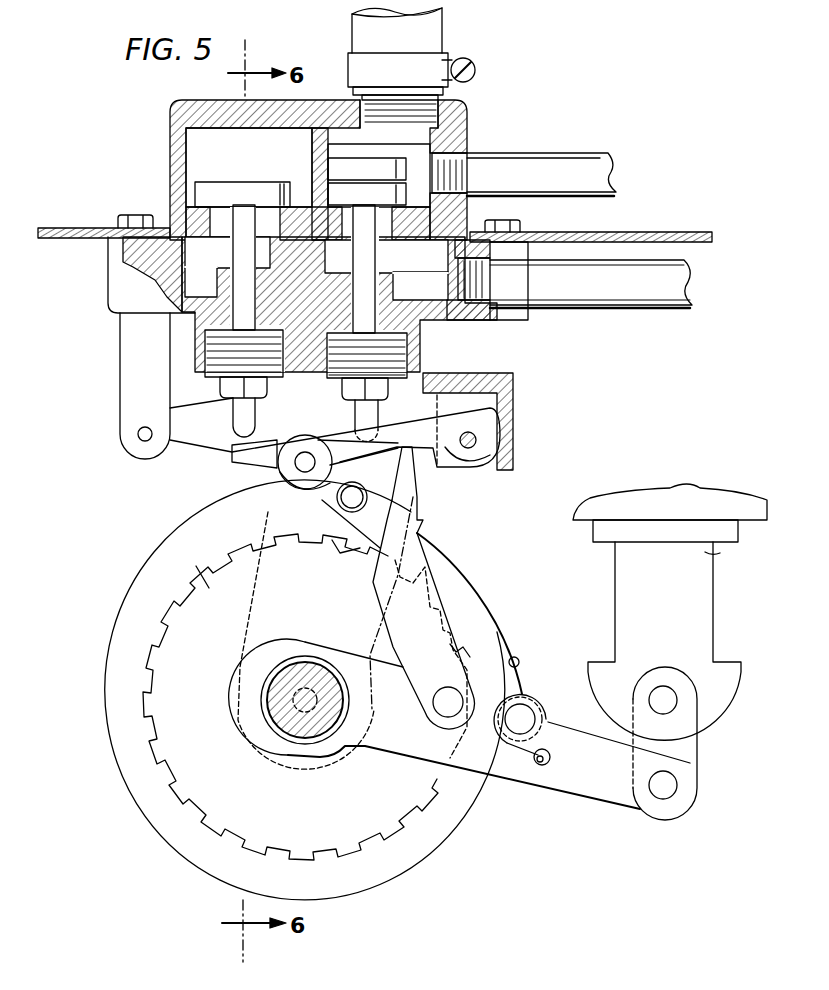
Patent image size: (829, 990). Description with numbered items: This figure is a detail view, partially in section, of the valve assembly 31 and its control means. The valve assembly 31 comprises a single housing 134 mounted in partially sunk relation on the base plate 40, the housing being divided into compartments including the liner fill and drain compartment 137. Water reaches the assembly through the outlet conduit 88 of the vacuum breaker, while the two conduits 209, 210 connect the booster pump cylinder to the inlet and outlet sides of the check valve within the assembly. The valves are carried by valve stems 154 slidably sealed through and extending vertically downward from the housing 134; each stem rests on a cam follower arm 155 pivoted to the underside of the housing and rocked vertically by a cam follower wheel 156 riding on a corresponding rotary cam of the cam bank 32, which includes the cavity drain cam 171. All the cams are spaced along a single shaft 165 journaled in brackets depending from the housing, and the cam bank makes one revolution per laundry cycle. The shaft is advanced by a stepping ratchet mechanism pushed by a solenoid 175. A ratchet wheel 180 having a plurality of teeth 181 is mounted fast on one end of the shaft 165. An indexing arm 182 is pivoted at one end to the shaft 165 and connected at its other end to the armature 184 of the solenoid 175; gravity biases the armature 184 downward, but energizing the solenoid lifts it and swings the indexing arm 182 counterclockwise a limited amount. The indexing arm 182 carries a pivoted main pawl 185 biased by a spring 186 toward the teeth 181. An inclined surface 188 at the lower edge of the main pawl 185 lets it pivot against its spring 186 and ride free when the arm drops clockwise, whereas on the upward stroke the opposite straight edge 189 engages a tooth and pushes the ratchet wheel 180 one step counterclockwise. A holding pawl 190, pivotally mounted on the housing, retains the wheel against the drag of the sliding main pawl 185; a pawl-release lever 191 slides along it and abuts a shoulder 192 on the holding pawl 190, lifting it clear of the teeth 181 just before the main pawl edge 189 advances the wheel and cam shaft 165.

The valve assembly 31 is at (166, 149).
The housing 134 is at (184, 166).
The outlet conduit 88 is at (447, 38).
The conduit 210 is at (592, 158).
The conduit 209 is at (660, 306).
The base plate 40 is at (65, 228).
The liner fill and drain compartment 137 is at (430, 302).
The valve stems 154 is at (236, 253).
The cam follower arm 155 is at (202, 424).
The cam follower wheel 156 is at (280, 478).
The shoulder 192 is at (418, 500).
The pawl-release lever 191 is at (380, 594).
The holding pawl 190 is at (370, 552).
The straight edge 189 is at (450, 648).
The inclined surface 188 is at (464, 670).
The cam bank 32 is at (130, 834).
The cavity drain cam 171 is at (121, 606).
The teeth 181 is at (192, 585).
The ratchet wheel 180 is at (200, 585).
The shaft 165 is at (300, 755).
The main pawl 185 is at (484, 662).
The spring 186 is at (520, 662).
The indexing arm 182 is at (575, 792).
The armature 184 is at (710, 622).
The solenoid 175 is at (731, 500).